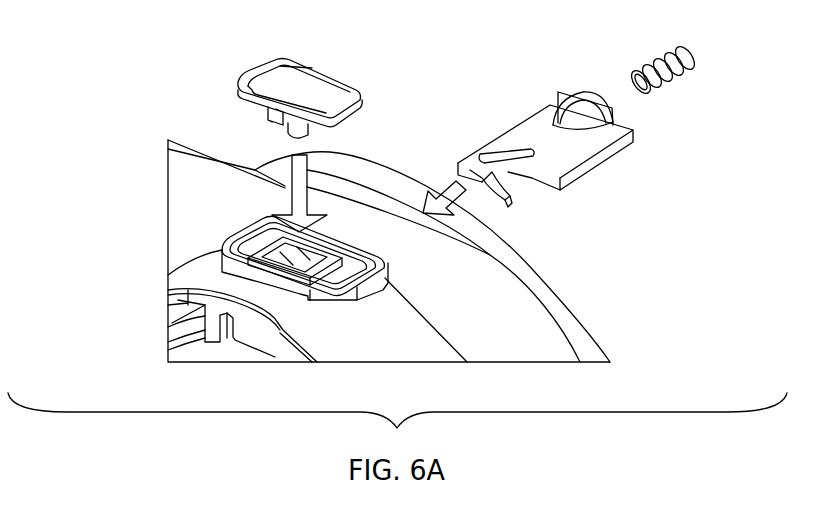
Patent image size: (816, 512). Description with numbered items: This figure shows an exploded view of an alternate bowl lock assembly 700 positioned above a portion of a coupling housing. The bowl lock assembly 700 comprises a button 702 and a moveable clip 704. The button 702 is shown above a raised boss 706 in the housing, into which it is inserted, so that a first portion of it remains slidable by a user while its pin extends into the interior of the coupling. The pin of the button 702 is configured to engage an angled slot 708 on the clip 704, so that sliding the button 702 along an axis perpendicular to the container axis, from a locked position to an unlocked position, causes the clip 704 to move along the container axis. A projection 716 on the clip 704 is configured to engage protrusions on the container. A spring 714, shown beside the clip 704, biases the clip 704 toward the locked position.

The bowl lock assembly 700 is at (108, 107).
The button 702 is at (288, 90).
The moveable clip 704 is at (582, 150).
The housing boss with button opening 706 is at (305, 258).
The angled slot 708 is at (492, 140).
The spring 714 is at (663, 90).
The projection 716 is at (515, 172).